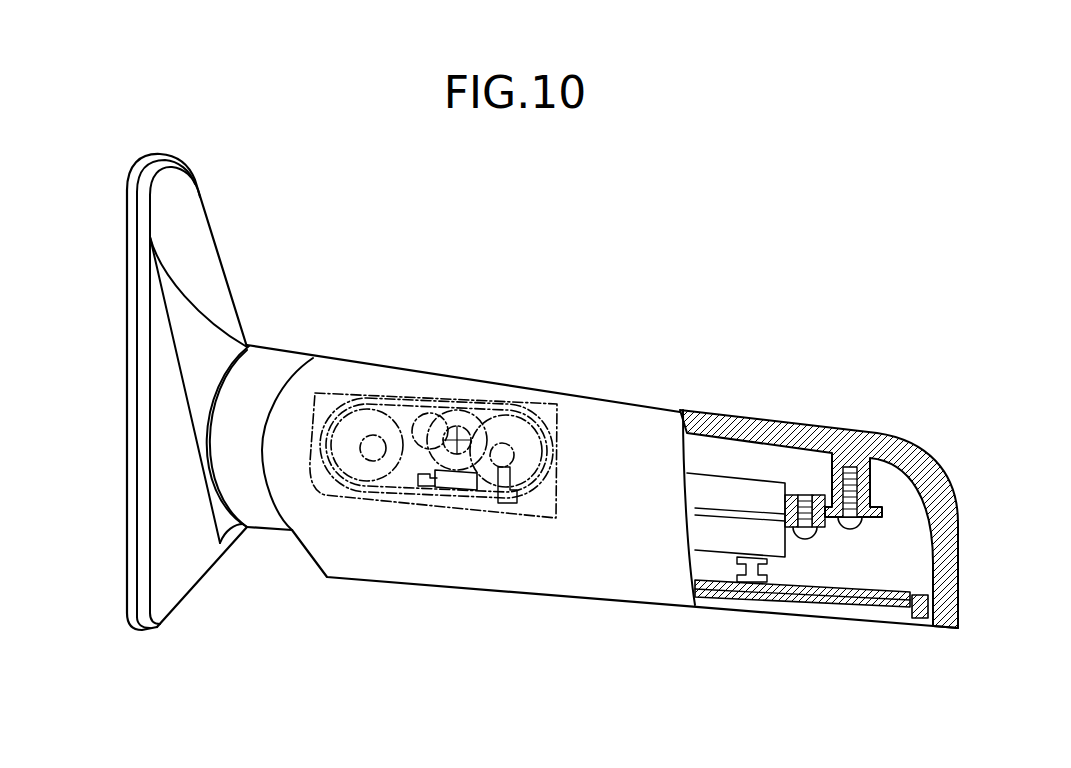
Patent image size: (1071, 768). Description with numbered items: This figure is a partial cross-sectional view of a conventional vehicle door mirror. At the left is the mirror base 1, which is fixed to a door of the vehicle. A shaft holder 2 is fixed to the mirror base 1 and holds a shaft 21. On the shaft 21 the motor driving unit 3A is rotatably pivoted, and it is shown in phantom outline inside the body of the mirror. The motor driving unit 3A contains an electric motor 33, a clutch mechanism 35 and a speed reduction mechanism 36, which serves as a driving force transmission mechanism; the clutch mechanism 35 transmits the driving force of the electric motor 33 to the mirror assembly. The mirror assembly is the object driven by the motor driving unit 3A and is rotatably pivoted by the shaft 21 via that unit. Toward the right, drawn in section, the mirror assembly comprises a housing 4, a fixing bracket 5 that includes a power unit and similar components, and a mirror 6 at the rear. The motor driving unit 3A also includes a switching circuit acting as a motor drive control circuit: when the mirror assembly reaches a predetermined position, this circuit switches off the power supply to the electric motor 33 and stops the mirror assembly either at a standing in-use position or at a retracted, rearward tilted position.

The mirror base 1 is at (121, 398).
The shaft holder 2 is at (383, 460).
The shaft 21 is at (362, 452).
The motor driving unit 3A is at (545, 527).
The housing 4 is at (742, 420).
The fixing bracket 5 is at (772, 490).
The mirror 6 is at (900, 607).
The electric motor 33 is at (507, 410).
The clutch mechanism 35 is at (392, 410).
The speed reduction mechanism 36 is at (457, 490).